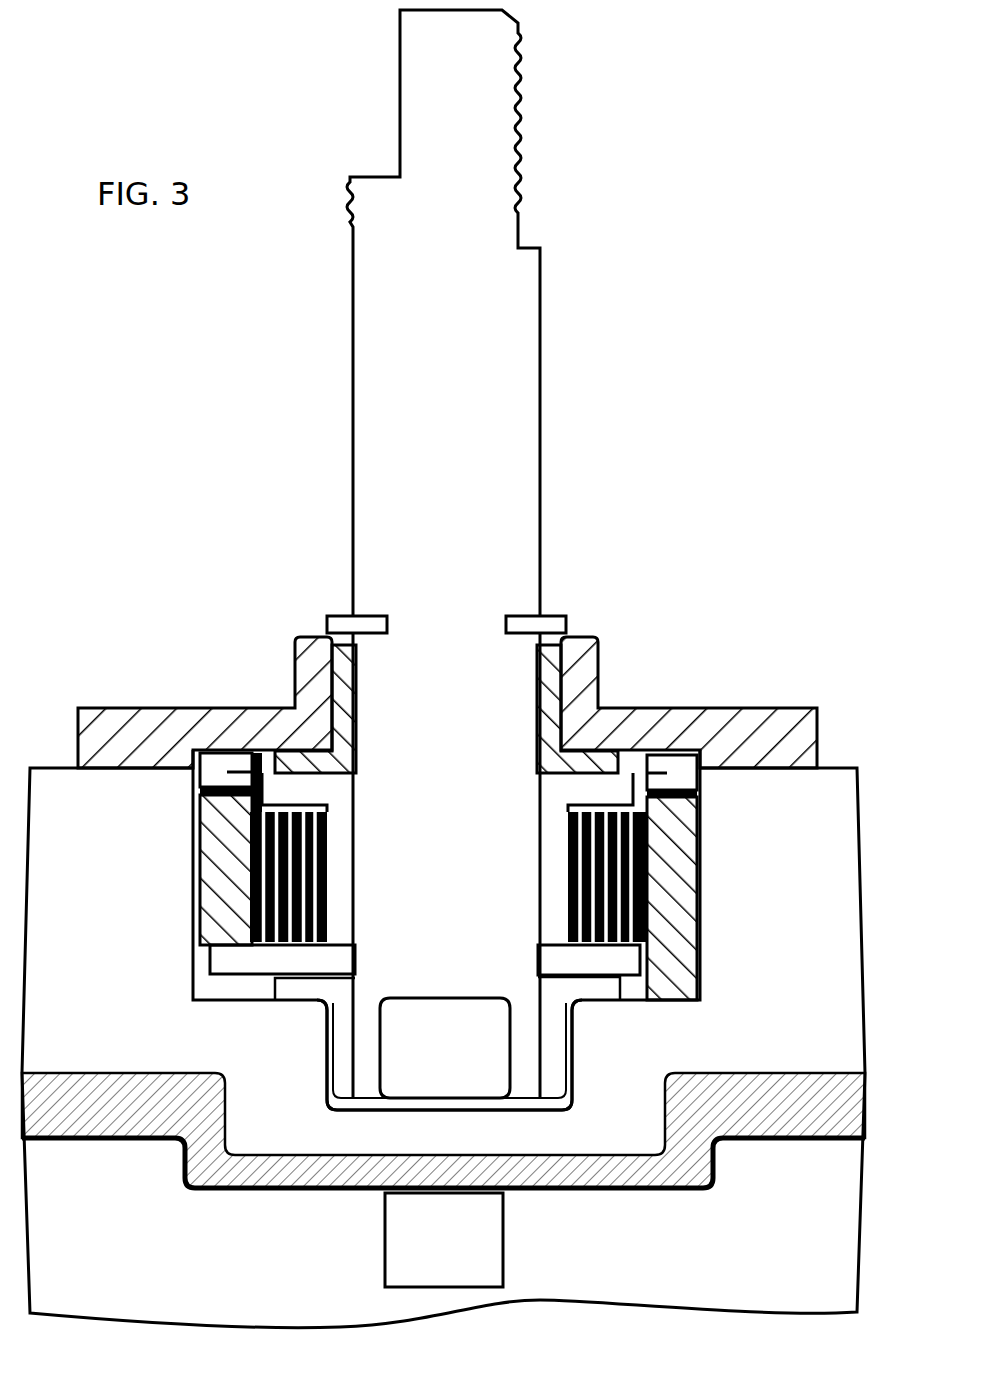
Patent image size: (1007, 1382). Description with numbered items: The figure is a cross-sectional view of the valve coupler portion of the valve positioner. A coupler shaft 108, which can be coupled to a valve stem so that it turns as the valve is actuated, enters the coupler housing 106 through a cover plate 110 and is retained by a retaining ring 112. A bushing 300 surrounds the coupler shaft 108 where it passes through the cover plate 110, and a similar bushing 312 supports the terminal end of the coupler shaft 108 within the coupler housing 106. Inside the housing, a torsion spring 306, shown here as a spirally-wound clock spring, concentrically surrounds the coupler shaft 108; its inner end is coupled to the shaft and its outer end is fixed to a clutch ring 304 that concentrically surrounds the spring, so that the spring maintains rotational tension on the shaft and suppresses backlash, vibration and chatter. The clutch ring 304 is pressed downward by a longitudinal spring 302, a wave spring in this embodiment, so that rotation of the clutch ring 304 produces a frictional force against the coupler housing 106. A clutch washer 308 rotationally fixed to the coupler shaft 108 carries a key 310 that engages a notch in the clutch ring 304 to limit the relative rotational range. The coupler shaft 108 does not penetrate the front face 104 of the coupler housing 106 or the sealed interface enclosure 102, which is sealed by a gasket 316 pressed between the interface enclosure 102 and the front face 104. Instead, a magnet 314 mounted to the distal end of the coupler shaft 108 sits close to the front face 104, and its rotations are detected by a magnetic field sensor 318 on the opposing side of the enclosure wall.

The interface enclosure 102 is at (757, 1140).
The front face 104 is at (426, 1143).
The coupler housing 106 is at (81, 923).
The coupler shaft 108 is at (431, 389).
The cover plate 110 is at (101, 746).
The retaining ring 112 is at (338, 614).
The bushing 300 is at (357, 708).
The longitudinal spring 302 is at (237, 748).
The clutch ring 304 is at (200, 853).
The torsion spring 306 is at (325, 857).
The clutch washer 308 is at (340, 953).
The key 310 is at (213, 957).
The bushing 312 is at (337, 1033).
The magnet 314 is at (426, 1063).
The gasket 316 is at (736, 1123).
The magnetic field sensor 318 is at (428, 1248).